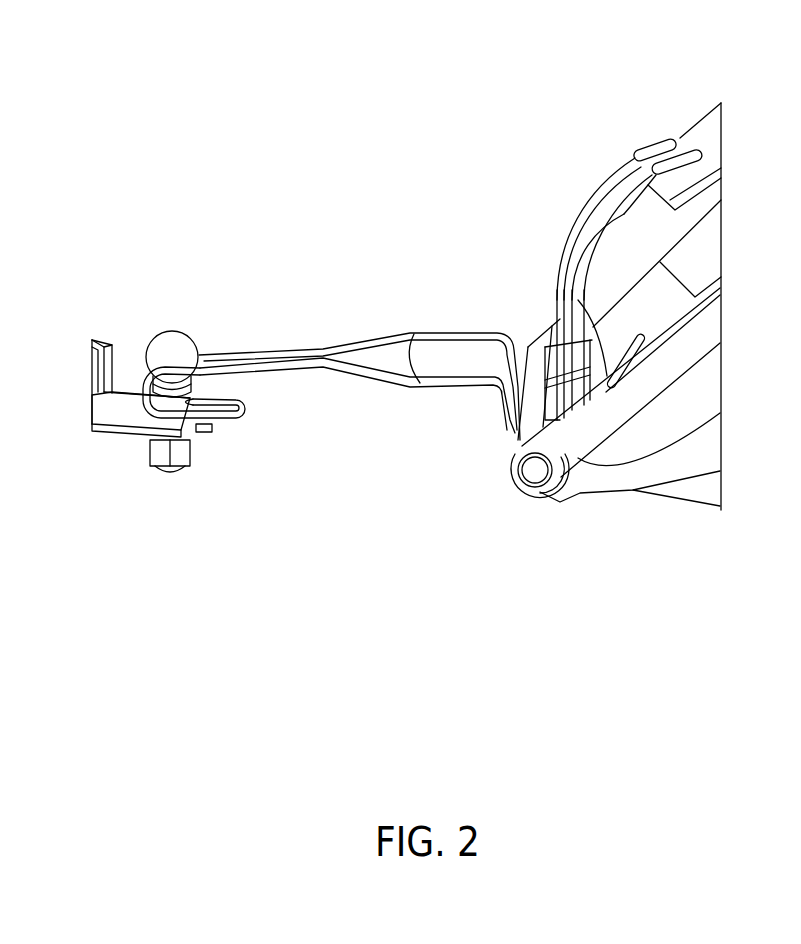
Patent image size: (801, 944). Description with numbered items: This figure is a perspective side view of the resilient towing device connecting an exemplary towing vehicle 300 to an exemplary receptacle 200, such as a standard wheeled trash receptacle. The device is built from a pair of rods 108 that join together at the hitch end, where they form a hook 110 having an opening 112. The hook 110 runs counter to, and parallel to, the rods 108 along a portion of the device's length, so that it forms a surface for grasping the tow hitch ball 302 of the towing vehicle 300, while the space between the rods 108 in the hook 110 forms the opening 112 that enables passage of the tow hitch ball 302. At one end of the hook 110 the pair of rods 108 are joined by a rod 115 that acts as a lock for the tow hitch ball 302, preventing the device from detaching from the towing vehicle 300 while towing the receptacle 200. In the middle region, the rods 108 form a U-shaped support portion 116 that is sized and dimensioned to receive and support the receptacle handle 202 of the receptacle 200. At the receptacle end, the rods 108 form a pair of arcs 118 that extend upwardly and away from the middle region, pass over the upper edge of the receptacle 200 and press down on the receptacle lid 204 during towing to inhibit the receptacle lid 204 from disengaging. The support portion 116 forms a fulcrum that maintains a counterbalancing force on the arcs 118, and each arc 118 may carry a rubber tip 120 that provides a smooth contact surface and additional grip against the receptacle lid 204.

The rods 108 is at (420, 334).
The hook 110 is at (200, 436).
The opening 112 is at (240, 408).
The rod 115 is at (125, 428).
The support portion 116 is at (507, 436).
The arcs 118 is at (598, 184).
The rubber tip 120 is at (654, 141).
The receptacle 200 is at (628, 528).
The receptacle handle 202 is at (530, 350).
The receptacle lid 204 is at (715, 105).
The towing vehicle 300 is at (128, 302).
The tow hitch ball 302 is at (178, 333).